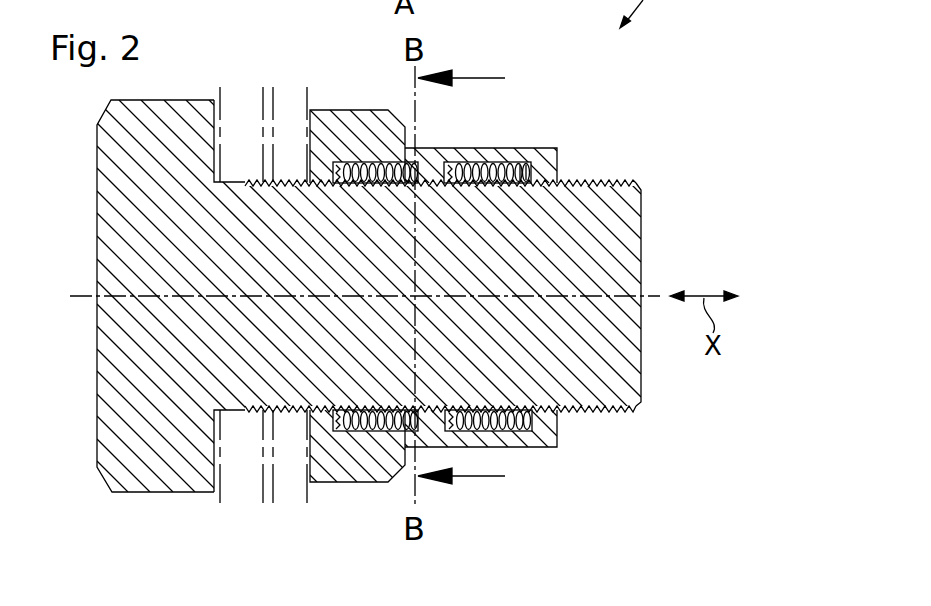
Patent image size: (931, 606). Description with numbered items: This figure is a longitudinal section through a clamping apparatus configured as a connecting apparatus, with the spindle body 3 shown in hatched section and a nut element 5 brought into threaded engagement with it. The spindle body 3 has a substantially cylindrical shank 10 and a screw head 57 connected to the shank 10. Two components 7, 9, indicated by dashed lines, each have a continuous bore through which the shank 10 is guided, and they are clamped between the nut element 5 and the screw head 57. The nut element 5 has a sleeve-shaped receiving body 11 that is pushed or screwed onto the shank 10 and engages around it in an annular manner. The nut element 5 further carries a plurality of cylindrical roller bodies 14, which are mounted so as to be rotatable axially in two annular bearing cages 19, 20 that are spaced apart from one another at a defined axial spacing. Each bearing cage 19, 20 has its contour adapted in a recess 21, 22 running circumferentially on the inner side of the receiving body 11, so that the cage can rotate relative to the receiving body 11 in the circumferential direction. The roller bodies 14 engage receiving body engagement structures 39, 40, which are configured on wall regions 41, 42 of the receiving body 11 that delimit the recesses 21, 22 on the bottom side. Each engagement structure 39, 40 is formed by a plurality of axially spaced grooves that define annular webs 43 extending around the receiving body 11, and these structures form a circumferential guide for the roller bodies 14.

The spindle body 3 is at (623, 243).
The nut element 5 is at (560, 155).
The component 7 is at (219, 474).
The component 9 is at (305, 482).
The shank 10 is at (617, 201).
The sleeve-shaped receiving body 11 is at (500, 162).
The cylindrical roller body 14 is at (355, 163).
The annular bearing cage 19 is at (448, 160).
The annular bearing cage 20 is at (338, 430).
The recess 21 is at (523, 422).
The recess 22 is at (560, 177).
The receiving body engagement structure 39 is at (510, 428).
The receiving body engagement structure 40 is at (373, 430).
The wall region 41 is at (533, 163).
The wall region 42 is at (362, 163).
The annular web 43 is at (502, 425).
The screw head 57 is at (137, 212).